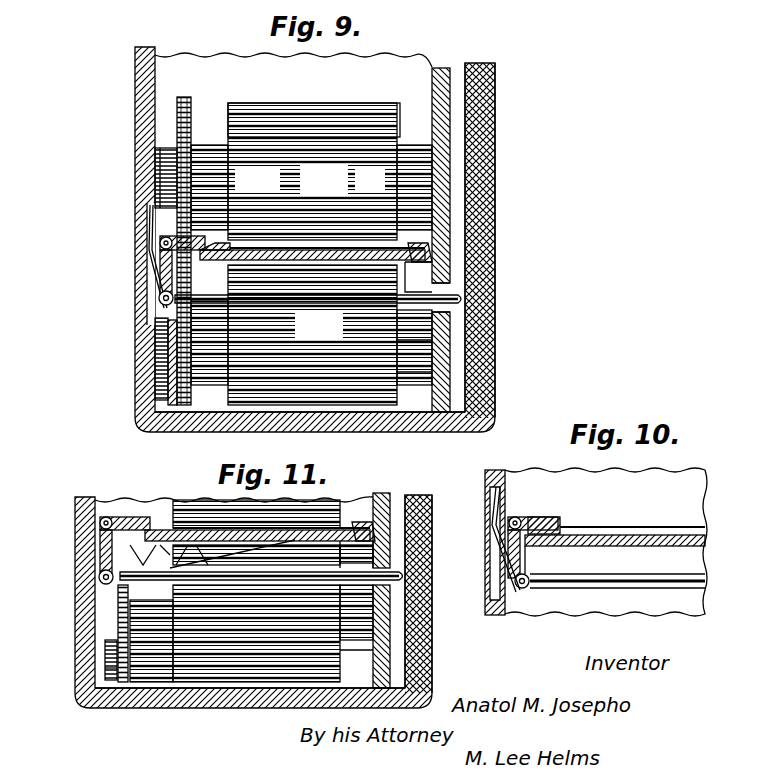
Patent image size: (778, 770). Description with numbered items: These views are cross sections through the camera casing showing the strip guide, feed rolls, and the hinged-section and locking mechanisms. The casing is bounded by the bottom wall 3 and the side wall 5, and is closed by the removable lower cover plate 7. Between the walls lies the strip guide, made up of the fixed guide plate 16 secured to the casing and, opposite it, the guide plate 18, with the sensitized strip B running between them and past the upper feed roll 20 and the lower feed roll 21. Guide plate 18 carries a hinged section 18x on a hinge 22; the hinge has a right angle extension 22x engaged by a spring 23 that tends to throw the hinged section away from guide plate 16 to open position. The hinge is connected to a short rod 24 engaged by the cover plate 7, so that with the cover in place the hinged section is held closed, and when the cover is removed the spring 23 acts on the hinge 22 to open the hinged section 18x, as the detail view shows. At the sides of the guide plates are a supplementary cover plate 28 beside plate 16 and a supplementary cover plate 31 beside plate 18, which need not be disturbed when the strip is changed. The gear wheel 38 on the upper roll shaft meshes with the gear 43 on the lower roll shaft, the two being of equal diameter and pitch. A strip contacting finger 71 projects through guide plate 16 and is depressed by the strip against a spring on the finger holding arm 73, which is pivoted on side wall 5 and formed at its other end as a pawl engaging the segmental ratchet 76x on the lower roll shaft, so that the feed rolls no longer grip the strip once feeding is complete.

In FIG. 9, the bottom wall 3 is at (174, 422).
In FIG. 11, the bottom wall 3 is at (190, 702).
In FIG. 9, the side wall 5 is at (134, 125).
In FIG. 11, the side wall 5 is at (74, 512).
In FIG. 10, the side wall 5 is at (486, 479).
In FIG. 9, the lower cover plate 7 is at (492, 178).
In FIG. 11, the lower cover plate 7 is at (428, 540).
In FIG. 9, the fixed guide plate 16 is at (418, 277).
In FIG. 11, the fixed guide plate 16 is at (356, 554).
In FIG. 10, the fixed guide plate 16 is at (609, 560).
In FIG. 9, the guide plate 18 is at (416, 243).
In FIG. 11, the guide plate 18 is at (374, 520).
In FIG. 10, the guide plate 18 is at (610, 527).
In FIG. 9, the hinged section 18x is at (216, 241).
In FIG. 10, the hinged section 18x is at (556, 518).
In FIG. 9, the upper feed roll 20 is at (311, 171).
In FIG. 11, the upper feed roll 20 is at (192, 500).
In FIG. 9, the lower feed roll 21 is at (311, 335).
In FIG. 11, the lower feed roll 21 is at (265, 618).
In FIG. 9, the hinge 22 is at (158, 243).
In FIG. 11, the hinge 22 is at (118, 516).
In FIG. 10, the hinge 22 is at (525, 516).
In FIG. 9, the right angle extension 22x is at (158, 298).
In FIG. 11, the right angle extension 22x is at (98, 565).
In FIG. 10, the right angle extension 22x is at (522, 559).
In FIG. 9, the spring 23 is at (150, 268).
In FIG. 10, the spring 23 is at (494, 565).
In FIG. 9, the short rod 24 is at (454, 300).
In FIG. 11, the short rod 24 is at (290, 580).
In FIG. 10, the short rod 24 is at (635, 576).
In FIG. 9, the supplementary cover plate 28 is at (447, 358).
In FIG. 11, the supplementary cover plate 28 is at (392, 652).
In FIG. 9, the supplementary cover plate 31 is at (450, 216).
In FIG. 11, the supplementary cover plate 31 is at (392, 505).
In FIG. 9, the gear wheel 38 is at (190, 114).
In FIG. 9, the gear 43 is at (188, 378).
In FIG. 11, the gear 43 is at (125, 675).
In FIG. 11, the strip contacting finger 71 is at (180, 560).
In FIG. 11, the finger holding arm 73 is at (112, 668).
In FIG. 11, the segmental ratchet 76x is at (108, 668).
In FIG. 9, the sensitized strip B is at (358, 250).
In FIG. 11, the sensitized strip B is at (345, 530).
In FIG. 10, the sensitized strip B is at (642, 535).